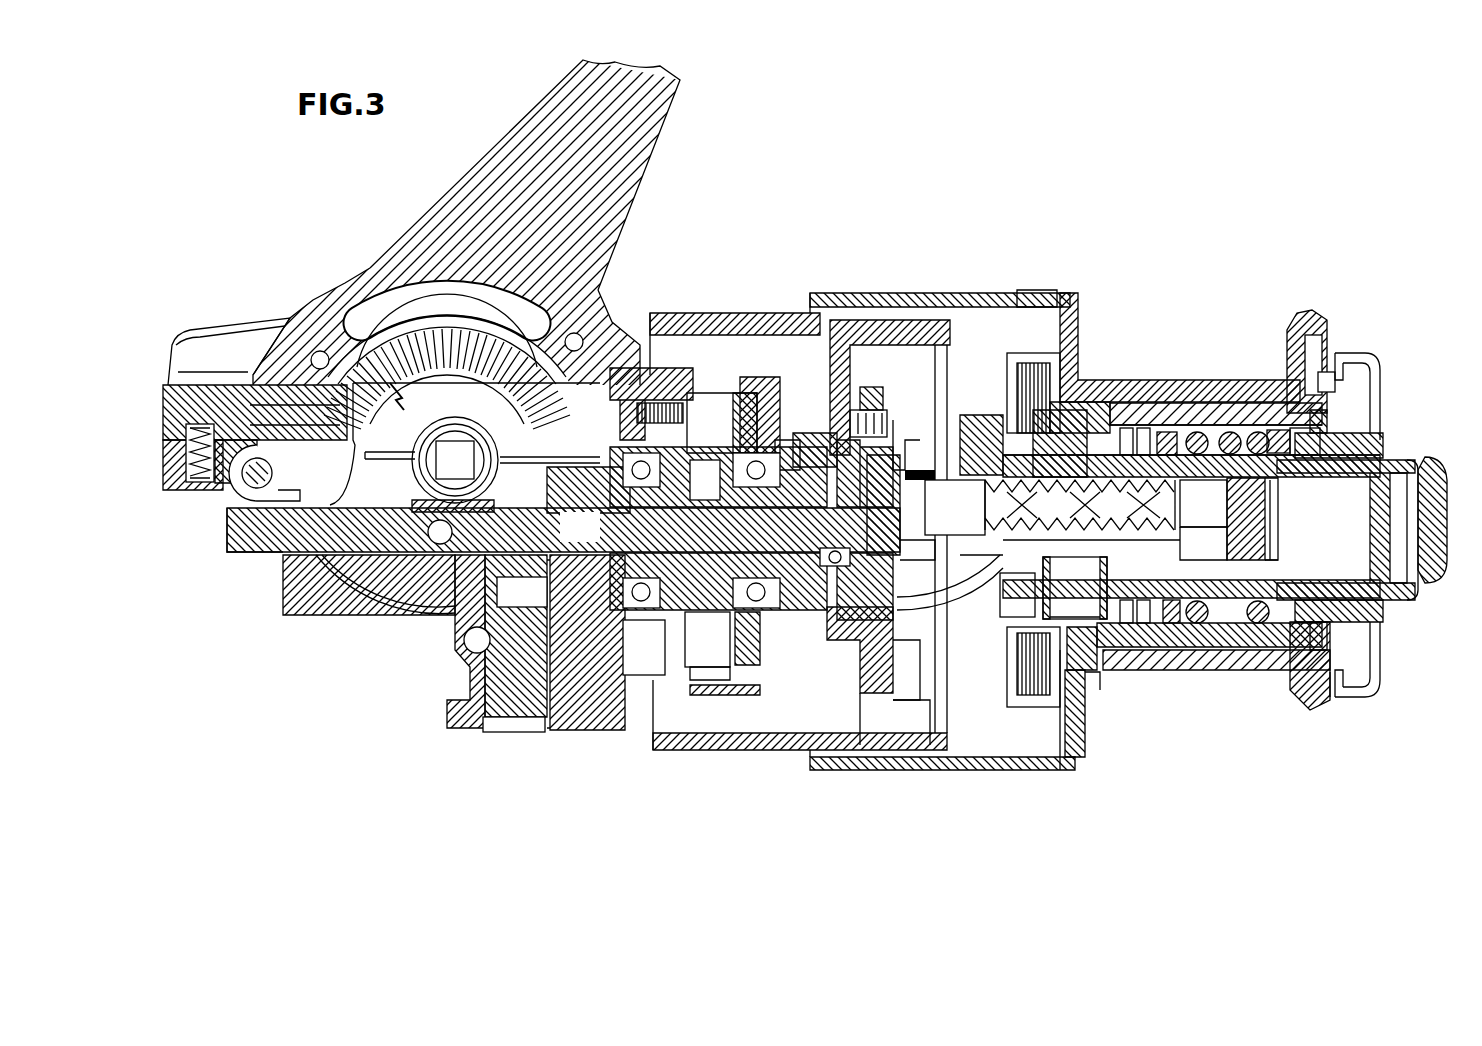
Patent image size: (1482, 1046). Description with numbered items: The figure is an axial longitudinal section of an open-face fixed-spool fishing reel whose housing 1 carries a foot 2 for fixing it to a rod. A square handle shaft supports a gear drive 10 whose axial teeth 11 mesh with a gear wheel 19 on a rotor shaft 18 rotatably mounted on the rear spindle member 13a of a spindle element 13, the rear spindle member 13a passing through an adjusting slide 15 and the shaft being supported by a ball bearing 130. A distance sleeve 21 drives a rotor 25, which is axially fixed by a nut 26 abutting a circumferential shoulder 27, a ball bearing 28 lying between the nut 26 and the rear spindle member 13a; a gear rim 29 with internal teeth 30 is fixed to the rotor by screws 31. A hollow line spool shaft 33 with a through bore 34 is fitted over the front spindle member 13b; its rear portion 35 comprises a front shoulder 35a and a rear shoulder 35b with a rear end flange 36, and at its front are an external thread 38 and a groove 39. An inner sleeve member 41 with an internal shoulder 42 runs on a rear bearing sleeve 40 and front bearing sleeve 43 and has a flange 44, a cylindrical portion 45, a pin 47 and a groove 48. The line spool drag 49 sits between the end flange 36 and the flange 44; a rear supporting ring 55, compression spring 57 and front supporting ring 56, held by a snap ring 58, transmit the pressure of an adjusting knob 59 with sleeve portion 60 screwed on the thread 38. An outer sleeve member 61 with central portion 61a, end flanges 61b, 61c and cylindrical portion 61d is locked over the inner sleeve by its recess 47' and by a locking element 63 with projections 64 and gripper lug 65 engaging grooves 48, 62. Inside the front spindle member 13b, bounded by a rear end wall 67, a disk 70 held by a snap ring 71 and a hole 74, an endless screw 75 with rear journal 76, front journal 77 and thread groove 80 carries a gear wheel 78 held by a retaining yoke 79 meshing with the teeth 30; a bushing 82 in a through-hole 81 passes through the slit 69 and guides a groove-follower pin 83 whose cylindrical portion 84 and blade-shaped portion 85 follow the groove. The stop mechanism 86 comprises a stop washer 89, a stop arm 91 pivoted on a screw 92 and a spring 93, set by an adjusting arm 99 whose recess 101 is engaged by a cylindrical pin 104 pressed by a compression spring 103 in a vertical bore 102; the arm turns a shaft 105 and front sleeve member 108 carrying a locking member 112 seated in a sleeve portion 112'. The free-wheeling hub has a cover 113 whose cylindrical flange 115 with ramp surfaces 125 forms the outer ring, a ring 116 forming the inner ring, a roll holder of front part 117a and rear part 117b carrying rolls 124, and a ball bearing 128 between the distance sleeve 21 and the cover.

The housing 1 is at (336, 312).
The foot 2 is at (590, 107).
The gear drive 10 is at (498, 470).
The teeth 11 is at (430, 345).
The spindle element 13 is at (630, 520).
The rear spindle member 13a is at (255, 556).
The front spindle member 13b is at (960, 452).
The adjusting slide 15 is at (415, 582).
The rotor shaft 18 is at (770, 490).
The gear wheel 19 is at (560, 600).
The distance sleeve 21 is at (791, 440).
The rotor 25 is at (735, 322).
The nut 26 is at (828, 565).
The circumferential shoulder 27 is at (870, 685).
The ball bearing 28 is at (890, 645).
The gear rim 29 is at (890, 668).
The internal teeth 30 is at (905, 455).
The screws 31 is at (890, 400).
The line spool shaft 33 is at (1230, 675).
The through bore 34 is at (1345, 478).
The rear portion 35 is at (1163, 530).
The front shoulder 35a is at (1110, 458).
The rear shoulder 35b is at (975, 398).
The rear end flange 36 is at (1005, 652).
The external thread 38 is at (1375, 622).
The circumferential groove 39 is at (1330, 582).
The rear bearing sleeve 40 is at (1130, 652).
The inner sleeve member 41 is at (1228, 428).
The internal shoulder 42 is at (1155, 432).
The front bearing sleeve 43 is at (1180, 432).
The flange 44 is at (1078, 385).
The cylindrical portion 45 is at (1030, 358).
The pin 47 is at (1046, 710).
The recess 47' is at (1108, 708).
The circumferential groove 48 is at (1378, 685).
The line spool drag 49 is at (1010, 680).
The rear supporting ring 55 is at (1195, 652).
The front supporting ring 56 is at (1275, 645).
The compression spring 57 is at (1260, 430).
The snap ring 58 is at (1377, 435).
The adjusting knob 59 is at (1440, 485).
The sleeve portion 60 is at (1375, 648).
The outer sleeve member 61 is at (1150, 690).
The central portion 61a is at (1220, 400).
The rear end flange 61b is at (1075, 320).
The front end flange 61c is at (1300, 322).
The cylindrical portion 61d is at (905, 296).
The internal circumferential groove 62 is at (1323, 340).
The locking element 63 is at (1378, 382).
The projections 64 is at (1340, 700).
The gripper lug 65 is at (1330, 378).
The rear end wall 67 is at (900, 600).
The longitudinal slit 69 is at (990, 575).
The disk 70 is at (1280, 545).
The snap ring 71 is at (1280, 562).
The hole 74 is at (1272, 502).
The screw 75 is at (1213, 540).
The rear journal 76 is at (930, 505).
The front journal 77 is at (1274, 522).
The gear wheel 78 is at (925, 540).
The retaining yoke 79 is at (935, 476).
The endless thread groove 80 is at (992, 586).
The radial through-hole 81 is at (1045, 600).
The bushing 82 is at (1075, 600).
The groove-follower pin 83 is at (1082, 535).
The cylindrical portion 84 is at (1090, 574).
The blade-shaped portion 85 is at (1135, 538).
The stop mechanism 86 is at (392, 380).
The stop washer 89 is at (705, 682).
The stop arm 91 is at (478, 400).
The screw 92 is at (276, 470).
The spring 93 is at (385, 463).
The adjusting arm 99 is at (180, 340).
The recess 101 is at (186, 442).
The vertical bore 102 is at (186, 470).
The compression spring 103 is at (232, 485).
The cylindrical pin 104 is at (206, 398).
The shaft 105 is at (502, 348).
The front sleeve member 108 is at (640, 368).
The locking member 112 is at (671, 379).
The sleeve portion 112' is at (723, 397).
The cover 113 is at (770, 655).
The cylindrical flange 115 is at (757, 400).
The ring 116 is at (620, 448).
The front part of roll holder 117a is at (783, 425).
The rear part of roll holder 117b is at (645, 695).
The roll 124 is at (712, 477).
The internal ramp surface 125 is at (735, 684).
The ball bearing 128 is at (775, 620).
The ball bearing 130 is at (660, 630).